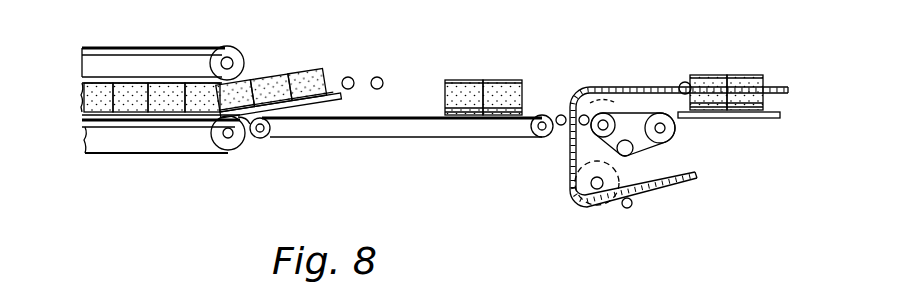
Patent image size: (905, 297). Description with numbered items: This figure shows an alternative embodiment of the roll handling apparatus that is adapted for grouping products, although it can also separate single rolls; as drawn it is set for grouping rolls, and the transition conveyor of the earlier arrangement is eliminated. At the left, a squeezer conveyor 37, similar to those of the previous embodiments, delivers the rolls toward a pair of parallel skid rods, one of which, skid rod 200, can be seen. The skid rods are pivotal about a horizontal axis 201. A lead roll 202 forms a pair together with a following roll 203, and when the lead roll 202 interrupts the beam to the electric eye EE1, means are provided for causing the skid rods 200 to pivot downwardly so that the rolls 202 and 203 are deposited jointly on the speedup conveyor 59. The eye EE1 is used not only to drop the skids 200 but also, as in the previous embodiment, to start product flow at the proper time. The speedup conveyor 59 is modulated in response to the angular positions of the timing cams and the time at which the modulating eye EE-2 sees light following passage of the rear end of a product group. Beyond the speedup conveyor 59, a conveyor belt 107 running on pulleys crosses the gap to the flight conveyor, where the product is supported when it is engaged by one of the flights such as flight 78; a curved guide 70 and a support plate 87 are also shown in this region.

The squeezer conveyor 37 is at (160, 160).
The horizontal axis 201 is at (242, 147).
The skid rod 200 is at (287, 90).
The roll 203 is at (270, 77).
The lead roll 202 is at (313, 67).
The electric eye EE1 is at (352, 78).
The modulating eye EE-2 is at (384, 80).
The speedup conveyor 59 is at (483, 153).
The curved guide channel 70 is at (747, 170).
The conveyor belt 107 is at (633, 151).
The flight 78 is at (682, 83).
The support plate 87 is at (778, 119).